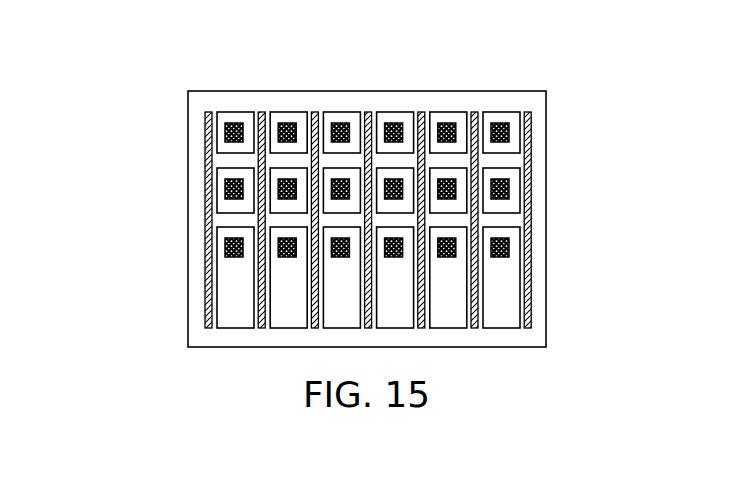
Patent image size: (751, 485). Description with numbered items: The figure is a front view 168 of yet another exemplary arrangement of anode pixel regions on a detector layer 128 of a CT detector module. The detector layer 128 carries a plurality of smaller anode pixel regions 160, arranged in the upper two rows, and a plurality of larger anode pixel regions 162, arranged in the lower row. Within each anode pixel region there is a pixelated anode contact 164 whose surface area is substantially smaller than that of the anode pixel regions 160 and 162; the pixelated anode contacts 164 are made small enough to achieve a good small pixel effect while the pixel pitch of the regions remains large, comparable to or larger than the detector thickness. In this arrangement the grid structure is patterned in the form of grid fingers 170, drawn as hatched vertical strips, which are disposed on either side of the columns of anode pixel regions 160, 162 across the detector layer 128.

The detector layer 128 is at (393, 94).
The smaller anode pixel regions 160 is at (222, 188).
The larger anode pixel regions 162 is at (223, 272).
The pixelated anode contacts 164 is at (508, 135).
The front view 168 is at (592, 57).
The grid fingers 170 is at (476, 328).